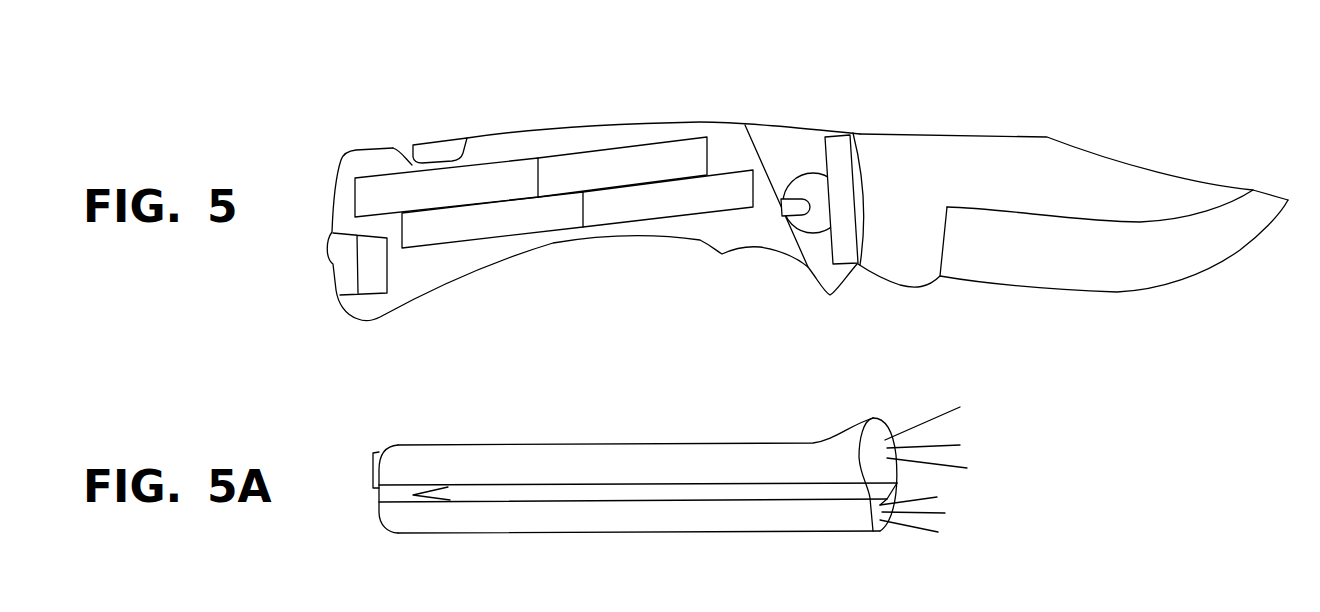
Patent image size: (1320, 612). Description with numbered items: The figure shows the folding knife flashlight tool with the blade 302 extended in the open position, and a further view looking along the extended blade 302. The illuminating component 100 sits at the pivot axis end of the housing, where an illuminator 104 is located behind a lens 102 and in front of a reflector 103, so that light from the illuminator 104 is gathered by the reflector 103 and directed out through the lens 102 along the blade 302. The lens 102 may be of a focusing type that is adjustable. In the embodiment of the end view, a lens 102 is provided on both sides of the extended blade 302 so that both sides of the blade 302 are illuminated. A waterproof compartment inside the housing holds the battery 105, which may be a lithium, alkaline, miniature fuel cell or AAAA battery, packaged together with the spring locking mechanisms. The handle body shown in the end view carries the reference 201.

In FIG. 5, the illuminating component 100 is at (765, 257).
In FIG. 5A, the illuminating component 100 is at (917, 413).
In FIG. 5, the lens 102 is at (846, 221).
In FIG. 5A, the lens 102 is at (886, 470).
In FIG. 5, the reflector 103 is at (792, 173).
In FIG. 5, the illuminator 104 is at (800, 220).
In FIG. 5, the battery 105 is at (607, 158).
In FIG. 5A, the handle body (side view) 201 is at (635, 515).
In FIG. 5, the blade 302 is at (988, 157).
In FIG. 5A, the blade 302 is at (466, 488).